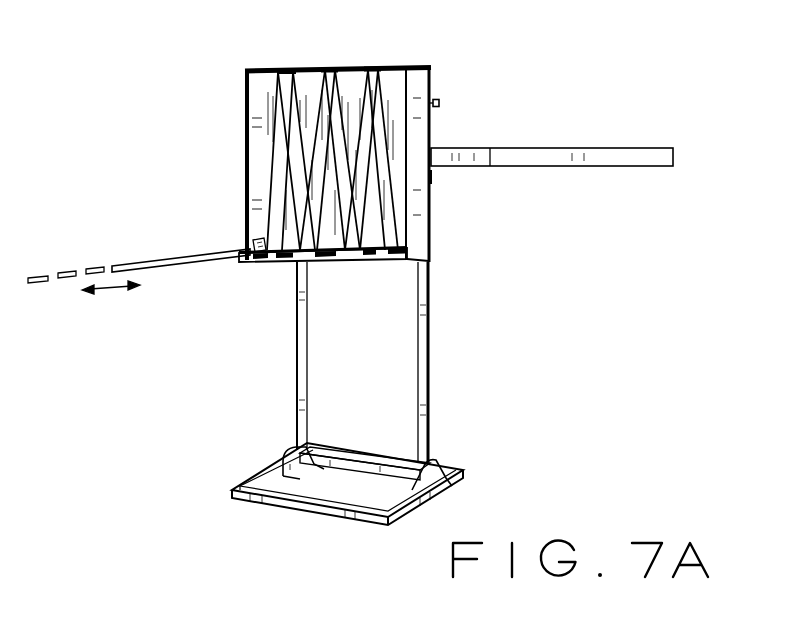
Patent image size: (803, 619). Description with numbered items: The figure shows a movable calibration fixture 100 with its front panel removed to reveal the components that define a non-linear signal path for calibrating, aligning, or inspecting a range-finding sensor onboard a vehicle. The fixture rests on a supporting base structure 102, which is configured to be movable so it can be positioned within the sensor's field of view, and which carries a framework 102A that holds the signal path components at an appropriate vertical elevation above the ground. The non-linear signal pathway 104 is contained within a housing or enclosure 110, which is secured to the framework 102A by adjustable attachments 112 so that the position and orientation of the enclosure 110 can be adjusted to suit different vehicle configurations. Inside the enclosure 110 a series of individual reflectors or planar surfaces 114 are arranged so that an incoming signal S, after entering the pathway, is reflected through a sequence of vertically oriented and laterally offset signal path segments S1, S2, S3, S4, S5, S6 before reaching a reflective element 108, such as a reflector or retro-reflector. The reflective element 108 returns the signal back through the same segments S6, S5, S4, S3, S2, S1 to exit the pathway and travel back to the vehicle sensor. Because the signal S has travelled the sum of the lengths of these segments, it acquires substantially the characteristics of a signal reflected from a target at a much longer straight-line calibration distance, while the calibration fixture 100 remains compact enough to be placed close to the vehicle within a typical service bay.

The movable calibration fixture 100 is at (523, 96).
The supporting base structure 102 is at (457, 458).
The framework 102A is at (432, 356).
The non-linear signal pathway 104 is at (319, 62).
The reflective element 108 is at (387, 259).
The housing or enclosure 110 is at (412, 210).
The adjustable attachments 112 is at (438, 93).
The reflectors 114 is at (290, 70).
The signal S is at (176, 256).
The signal path segment S1 is at (279, 160).
The signal path segment S2 is at (290, 128).
The signal path segment S3 is at (312, 182).
The signal path segment S4 is at (300, 252).
The signal path segment S5 is at (365, 165).
The signal path segment S6 is at (392, 214).